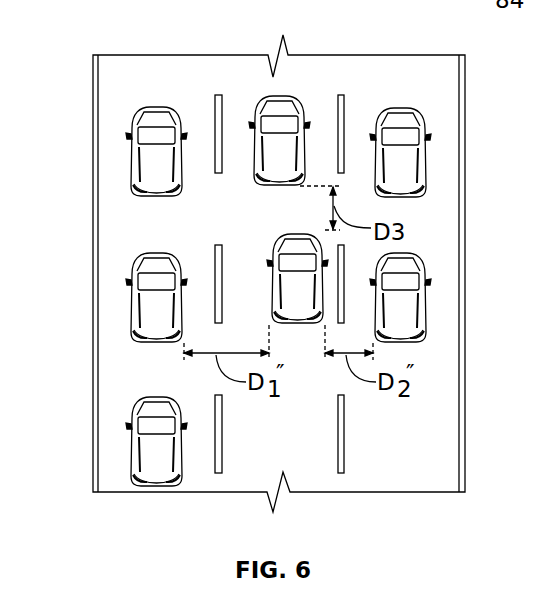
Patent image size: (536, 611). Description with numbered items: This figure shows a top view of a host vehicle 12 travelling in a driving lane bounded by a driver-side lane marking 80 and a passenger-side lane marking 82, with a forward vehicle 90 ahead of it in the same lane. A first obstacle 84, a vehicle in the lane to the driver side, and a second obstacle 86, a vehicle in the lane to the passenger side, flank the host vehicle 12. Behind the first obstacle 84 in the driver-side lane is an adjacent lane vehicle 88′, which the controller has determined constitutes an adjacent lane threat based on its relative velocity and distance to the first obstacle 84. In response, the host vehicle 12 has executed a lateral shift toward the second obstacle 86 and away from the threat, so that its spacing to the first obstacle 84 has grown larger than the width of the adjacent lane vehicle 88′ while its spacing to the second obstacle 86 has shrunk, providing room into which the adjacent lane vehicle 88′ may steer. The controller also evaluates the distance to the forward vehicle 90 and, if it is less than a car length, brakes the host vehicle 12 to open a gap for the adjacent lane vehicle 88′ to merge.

The driver-side lane marking 80 is at (215, 102).
The passenger-side lane marking 82 is at (344, 102).
The forward vehicle 90 is at (266, 93).
The host vehicle 12 is at (273, 247).
The first obstacle 84 is at (128, 300).
The second obstacle 86 is at (428, 298).
The adjacent lane vehicle 88′ is at (117, 441).